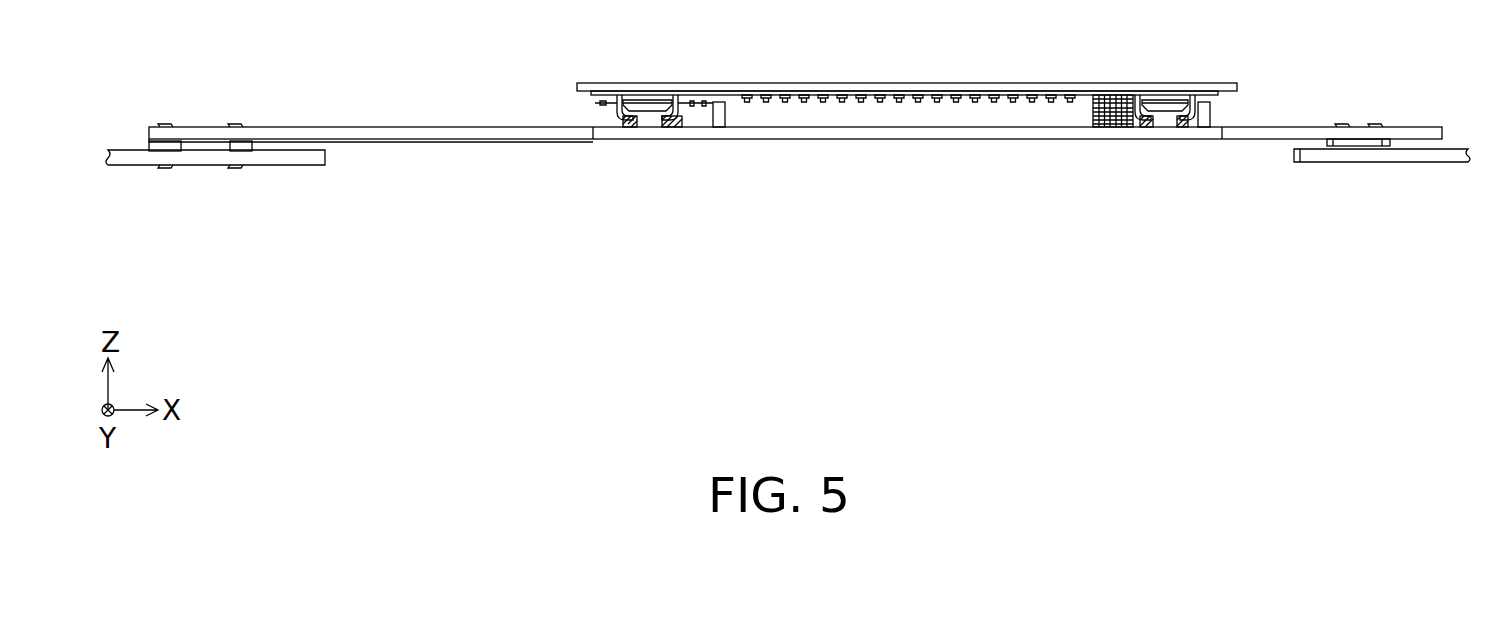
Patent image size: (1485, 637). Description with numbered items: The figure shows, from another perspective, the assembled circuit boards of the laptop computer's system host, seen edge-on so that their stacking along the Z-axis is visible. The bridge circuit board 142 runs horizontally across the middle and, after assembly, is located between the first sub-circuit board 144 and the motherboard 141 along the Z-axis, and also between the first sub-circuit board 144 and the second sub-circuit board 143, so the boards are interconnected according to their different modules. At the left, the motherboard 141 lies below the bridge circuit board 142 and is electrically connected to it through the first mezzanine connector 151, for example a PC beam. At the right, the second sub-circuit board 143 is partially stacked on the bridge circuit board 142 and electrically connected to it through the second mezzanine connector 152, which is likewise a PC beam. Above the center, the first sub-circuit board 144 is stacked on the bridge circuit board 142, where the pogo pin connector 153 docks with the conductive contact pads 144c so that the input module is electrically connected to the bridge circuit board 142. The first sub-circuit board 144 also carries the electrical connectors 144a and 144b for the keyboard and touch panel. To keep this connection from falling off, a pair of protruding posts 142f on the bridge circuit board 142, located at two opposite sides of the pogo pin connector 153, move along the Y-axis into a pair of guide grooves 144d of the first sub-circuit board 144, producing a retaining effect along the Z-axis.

The motherboard 141 is at (263, 160).
The bridge circuit board 142 is at (408, 127).
The protruding posts 142f is at (638, 103).
The second sub-circuit board 143 is at (1418, 162).
The first sub-circuit board 144 is at (947, 83).
The electrical connector 144a is at (1120, 125).
The electrical connector 144b is at (710, 113).
The conductive contact pads 144c is at (1077, 91).
The guide grooves 144d is at (685, 120).
The first mezzanine connector 151 is at (207, 142).
The second mezzanine connector 152 is at (1363, 145).
The pogo pin connector 153 is at (913, 124).